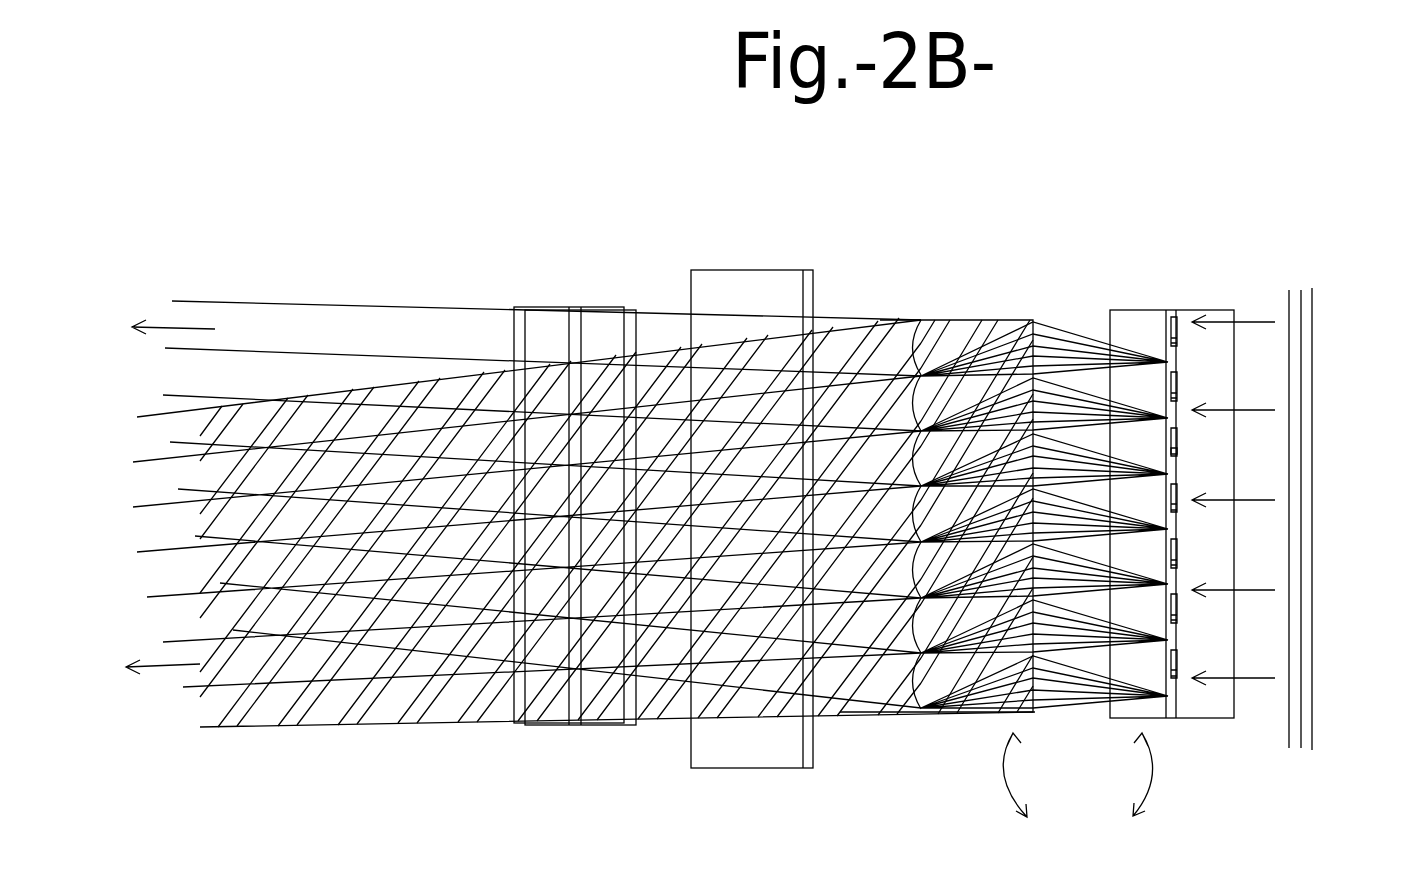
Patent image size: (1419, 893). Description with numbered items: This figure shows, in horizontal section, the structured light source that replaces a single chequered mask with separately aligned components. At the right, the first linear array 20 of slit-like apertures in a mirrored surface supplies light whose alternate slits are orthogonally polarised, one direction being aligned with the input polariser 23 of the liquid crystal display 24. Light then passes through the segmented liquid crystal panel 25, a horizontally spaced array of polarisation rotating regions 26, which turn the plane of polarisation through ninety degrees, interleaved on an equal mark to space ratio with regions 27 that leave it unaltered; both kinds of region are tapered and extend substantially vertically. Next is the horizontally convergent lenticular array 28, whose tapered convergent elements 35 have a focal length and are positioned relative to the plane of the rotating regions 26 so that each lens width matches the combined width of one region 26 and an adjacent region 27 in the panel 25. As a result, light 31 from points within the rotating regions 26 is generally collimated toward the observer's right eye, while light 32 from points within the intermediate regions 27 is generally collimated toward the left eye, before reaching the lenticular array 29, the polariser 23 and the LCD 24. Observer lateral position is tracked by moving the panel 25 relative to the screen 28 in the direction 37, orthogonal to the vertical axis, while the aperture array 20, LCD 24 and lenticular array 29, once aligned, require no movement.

The first linear array of light modifying elements 20 is at (1305, 295).
The input polariser 23 is at (627, 330).
The liquid crystal display 24 is at (590, 307).
The segmented liquid crystal panel 25 is at (1190, 312).
The polarisation rotating regions 26 is at (1310, 395).
The non-rotating regions 27 is at (1178, 460).
The horizontally convergent lenticular array 28 is at (995, 340).
The lenticular array 29 is at (763, 290).
The light collimated toward right eye 31 is at (192, 730).
The light collimated toward left eye 32 is at (172, 300).
The tapered convergent elements 35 is at (915, 700).
The lateral tracking direction 37 is at (1142, 795).